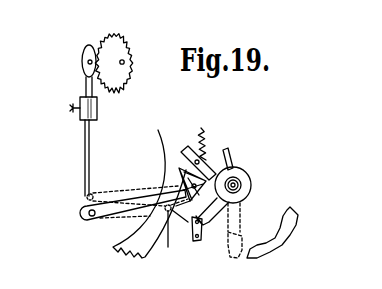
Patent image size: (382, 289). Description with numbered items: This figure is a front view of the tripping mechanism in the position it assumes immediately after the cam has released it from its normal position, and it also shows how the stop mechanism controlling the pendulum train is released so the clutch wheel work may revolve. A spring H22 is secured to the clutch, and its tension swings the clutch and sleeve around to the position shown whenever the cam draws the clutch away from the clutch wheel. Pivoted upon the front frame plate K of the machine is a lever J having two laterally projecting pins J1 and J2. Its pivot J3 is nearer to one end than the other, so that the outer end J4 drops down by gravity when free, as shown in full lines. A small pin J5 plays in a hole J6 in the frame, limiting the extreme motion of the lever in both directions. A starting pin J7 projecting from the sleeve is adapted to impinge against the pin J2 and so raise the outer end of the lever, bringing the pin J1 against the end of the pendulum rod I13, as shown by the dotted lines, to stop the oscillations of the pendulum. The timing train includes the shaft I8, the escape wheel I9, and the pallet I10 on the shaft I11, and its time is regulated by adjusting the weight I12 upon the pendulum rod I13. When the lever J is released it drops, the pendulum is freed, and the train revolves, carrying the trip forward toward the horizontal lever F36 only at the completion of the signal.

The shaft I8 is at (124, 62).
The escape wheel I9 is at (113, 50).
The pallet I10 is at (87, 56).
The shaft I11 is at (88, 63).
The weight I12 is at (80, 116).
The pendulum rod I13 is at (85, 153).
The lever J is at (115, 218).
The pin J1 is at (84, 207).
The pin J2 is at (187, 172).
The pivot J3 is at (162, 236).
The outer end J4 is at (81, 218).
The small pin J5 is at (188, 186).
The hole J6 is at (189, 181).
The starting pin J7 is at (230, 150).
The front frame plate K is at (149, 194).
The spring H22 is at (206, 128).
The horizontal lever F36 is at (294, 228).